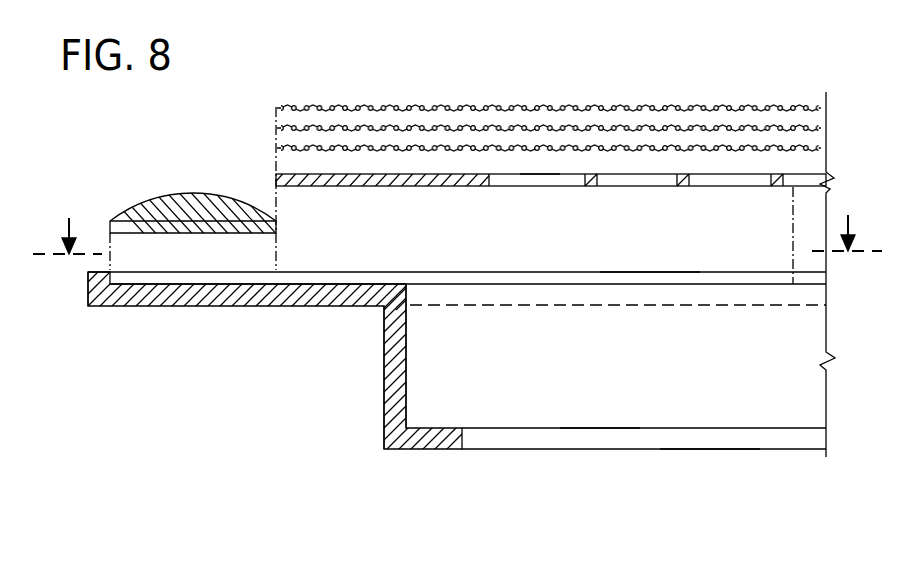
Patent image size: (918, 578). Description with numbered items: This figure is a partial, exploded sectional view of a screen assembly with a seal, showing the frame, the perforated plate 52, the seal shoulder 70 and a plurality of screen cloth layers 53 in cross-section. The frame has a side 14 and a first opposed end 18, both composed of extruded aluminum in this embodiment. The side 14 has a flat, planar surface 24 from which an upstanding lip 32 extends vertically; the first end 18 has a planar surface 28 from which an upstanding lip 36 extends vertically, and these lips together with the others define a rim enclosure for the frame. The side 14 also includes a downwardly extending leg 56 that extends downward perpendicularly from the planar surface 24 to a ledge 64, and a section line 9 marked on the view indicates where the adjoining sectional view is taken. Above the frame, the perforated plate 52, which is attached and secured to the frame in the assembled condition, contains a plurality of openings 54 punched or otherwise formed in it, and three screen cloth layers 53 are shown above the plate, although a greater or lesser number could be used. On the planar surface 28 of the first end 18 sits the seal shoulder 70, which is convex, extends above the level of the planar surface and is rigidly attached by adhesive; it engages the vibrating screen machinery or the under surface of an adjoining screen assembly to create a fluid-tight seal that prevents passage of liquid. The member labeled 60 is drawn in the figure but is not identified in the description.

The section line 9 is at (457, 232).
The side 14 is at (708, 258).
The first opposed end 18 is at (126, 338).
The planar surface 24 is at (512, 284).
The planar surface 28 is at (284, 284).
The upstanding lip 32 is at (635, 272).
The upstanding lip 36 is at (88, 273).
The perforated plate 52 is at (275, 180).
The screen cloth layers 53 is at (277, 148).
The openings 54 is at (537, 178).
The downwardly extending leg 56 is at (587, 399).
The side wall 60 is at (384, 371).
The ledge 64 is at (698, 434).
The seal shoulder 70 is at (170, 197).